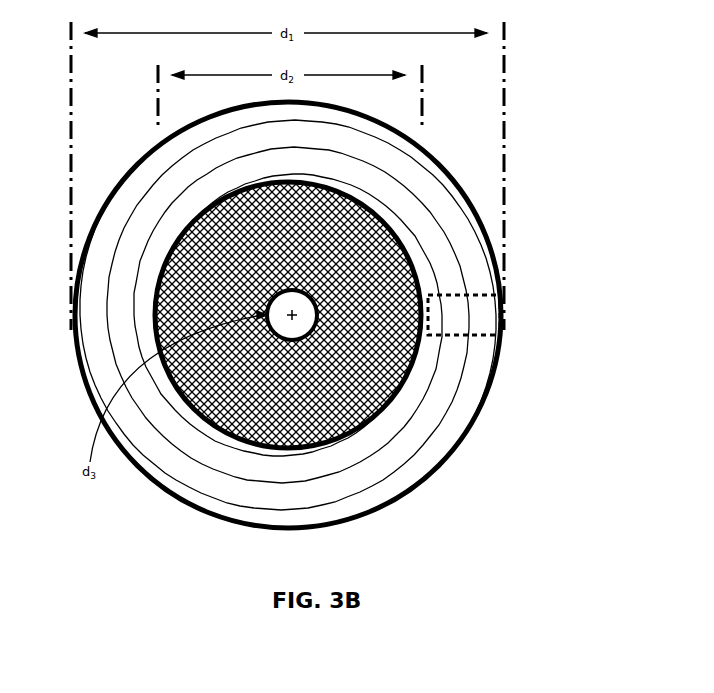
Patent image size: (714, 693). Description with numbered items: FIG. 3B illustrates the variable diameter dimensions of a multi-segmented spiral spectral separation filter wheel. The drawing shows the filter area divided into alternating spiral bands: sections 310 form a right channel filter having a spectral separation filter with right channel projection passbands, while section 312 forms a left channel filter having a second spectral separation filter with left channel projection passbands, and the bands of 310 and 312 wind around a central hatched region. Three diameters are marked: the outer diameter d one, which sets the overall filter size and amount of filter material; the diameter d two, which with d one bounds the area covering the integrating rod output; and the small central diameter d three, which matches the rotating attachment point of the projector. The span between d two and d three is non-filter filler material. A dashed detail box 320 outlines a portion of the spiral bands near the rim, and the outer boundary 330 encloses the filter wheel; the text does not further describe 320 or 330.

The section 310 is at (303, 301).
The section 312 is at (276, 328).
The detail region 320 is at (500, 308).
The outer shell 330 is at (494, 411).